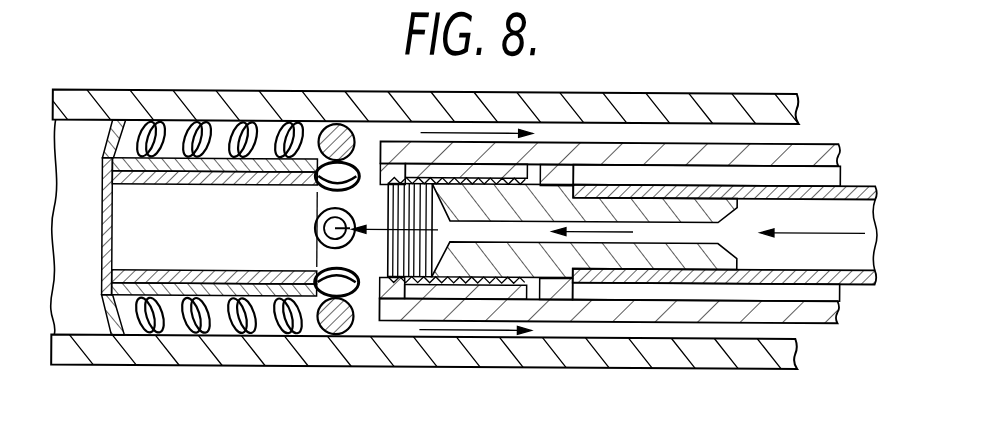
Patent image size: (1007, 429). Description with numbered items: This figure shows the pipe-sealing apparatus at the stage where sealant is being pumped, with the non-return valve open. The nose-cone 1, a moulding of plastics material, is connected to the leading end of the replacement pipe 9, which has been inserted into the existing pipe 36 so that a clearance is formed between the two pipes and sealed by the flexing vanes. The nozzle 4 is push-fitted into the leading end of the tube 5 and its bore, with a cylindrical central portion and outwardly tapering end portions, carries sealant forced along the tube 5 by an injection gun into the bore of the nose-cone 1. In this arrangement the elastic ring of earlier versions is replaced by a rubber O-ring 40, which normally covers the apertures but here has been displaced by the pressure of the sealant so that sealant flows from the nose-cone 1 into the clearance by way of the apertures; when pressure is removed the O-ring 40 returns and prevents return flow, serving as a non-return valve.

The existing pipe 36 is at (607, 92).
The nose-cone 1 is at (151, 339).
The rubber O-ring 40 is at (345, 337).
The nozzle 4 is at (558, 268).
The replacement pipe 9 is at (731, 308).
The tube 5 is at (863, 284).